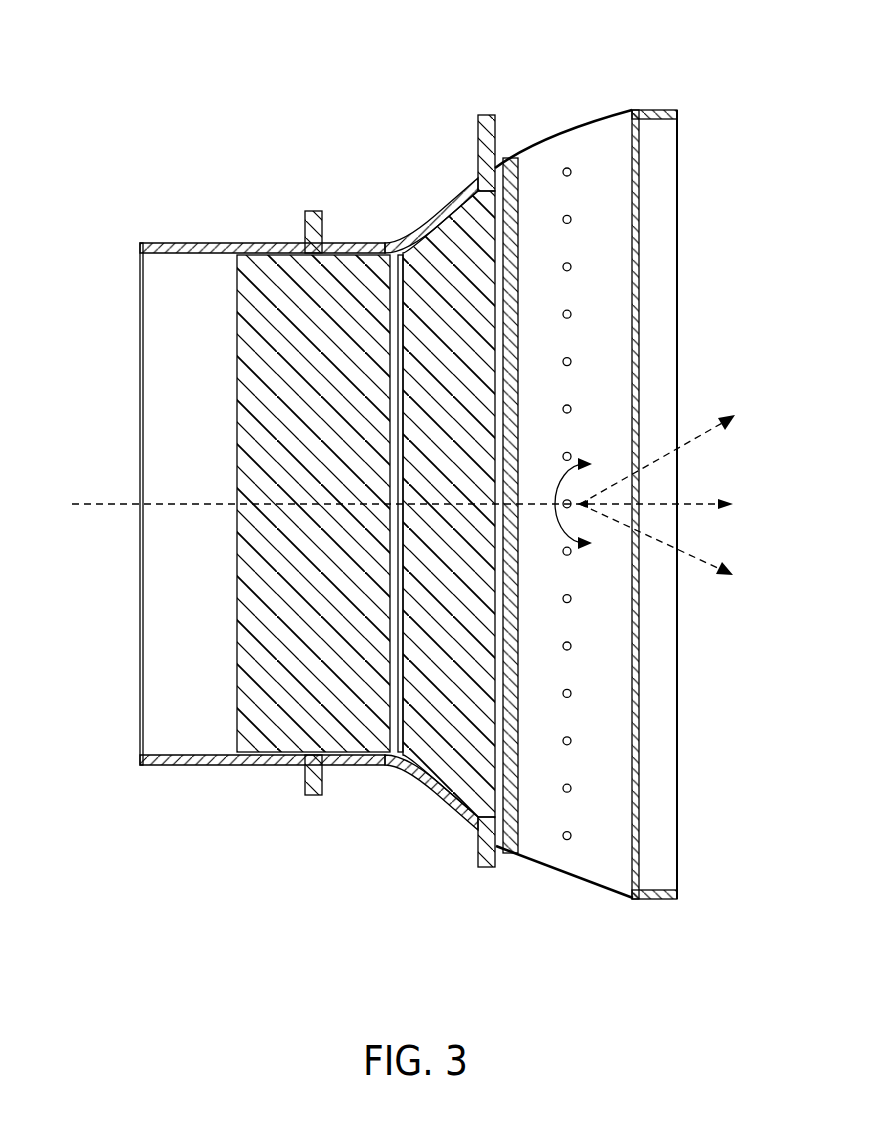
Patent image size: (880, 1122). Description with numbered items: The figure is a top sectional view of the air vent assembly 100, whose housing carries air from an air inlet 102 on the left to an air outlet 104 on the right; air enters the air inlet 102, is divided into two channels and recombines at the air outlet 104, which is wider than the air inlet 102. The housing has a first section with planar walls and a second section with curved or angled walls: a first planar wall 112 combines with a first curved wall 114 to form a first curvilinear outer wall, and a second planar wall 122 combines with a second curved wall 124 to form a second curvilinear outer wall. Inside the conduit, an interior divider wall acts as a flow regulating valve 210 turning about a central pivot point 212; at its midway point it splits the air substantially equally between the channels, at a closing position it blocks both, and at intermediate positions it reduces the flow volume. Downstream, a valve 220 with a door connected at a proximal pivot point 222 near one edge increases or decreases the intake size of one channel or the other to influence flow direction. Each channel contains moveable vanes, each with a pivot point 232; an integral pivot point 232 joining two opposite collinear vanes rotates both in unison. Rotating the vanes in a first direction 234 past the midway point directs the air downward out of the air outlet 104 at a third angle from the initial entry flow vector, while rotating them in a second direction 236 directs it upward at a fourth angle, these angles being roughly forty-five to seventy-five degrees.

The air vent assembly 100 is at (190, 86).
The air inlet 102 is at (140, 362).
The air outlet 104 is at (677, 352).
The first planar wall 112 is at (157, 717).
The first curved wall 114 is at (660, 738).
The second planar wall 122 is at (185, 243).
The second curved wall 124 is at (449, 200).
The flow regulating valve 210 is at (272, 721).
The pivot point 212 is at (314, 792).
The valve 220 is at (432, 745).
The pivot point 222 is at (492, 862).
The pivot point 232 is at (572, 744).
The first direction 234 is at (625, 472).
The second direction 236 is at (621, 565).